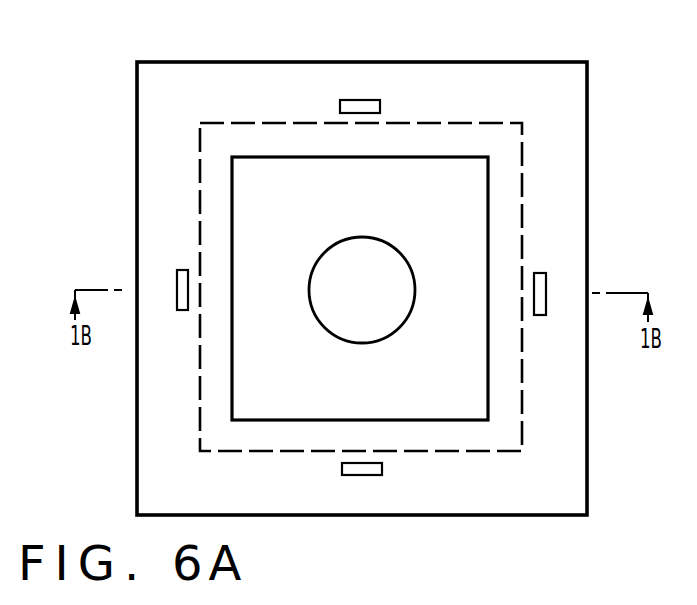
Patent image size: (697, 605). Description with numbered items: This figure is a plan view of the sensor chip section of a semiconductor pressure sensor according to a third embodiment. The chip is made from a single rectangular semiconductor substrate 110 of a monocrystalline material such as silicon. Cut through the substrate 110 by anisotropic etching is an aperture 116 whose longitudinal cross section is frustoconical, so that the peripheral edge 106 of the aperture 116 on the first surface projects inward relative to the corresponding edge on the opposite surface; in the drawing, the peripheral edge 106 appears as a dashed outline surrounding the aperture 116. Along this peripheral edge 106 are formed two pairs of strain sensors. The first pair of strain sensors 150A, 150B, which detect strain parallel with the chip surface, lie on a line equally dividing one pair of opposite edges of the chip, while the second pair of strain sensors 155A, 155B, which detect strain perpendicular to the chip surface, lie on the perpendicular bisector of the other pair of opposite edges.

The semiconductor substrate 110 is at (575, 144).
The peripheral edge 106 is at (502, 393).
The aperture 116 is at (402, 266).
The strain sensor 150A is at (183, 311).
The strain sensor 150B is at (538, 278).
The strain sensor 155A is at (376, 108).
The strain sensor 155B is at (377, 470).